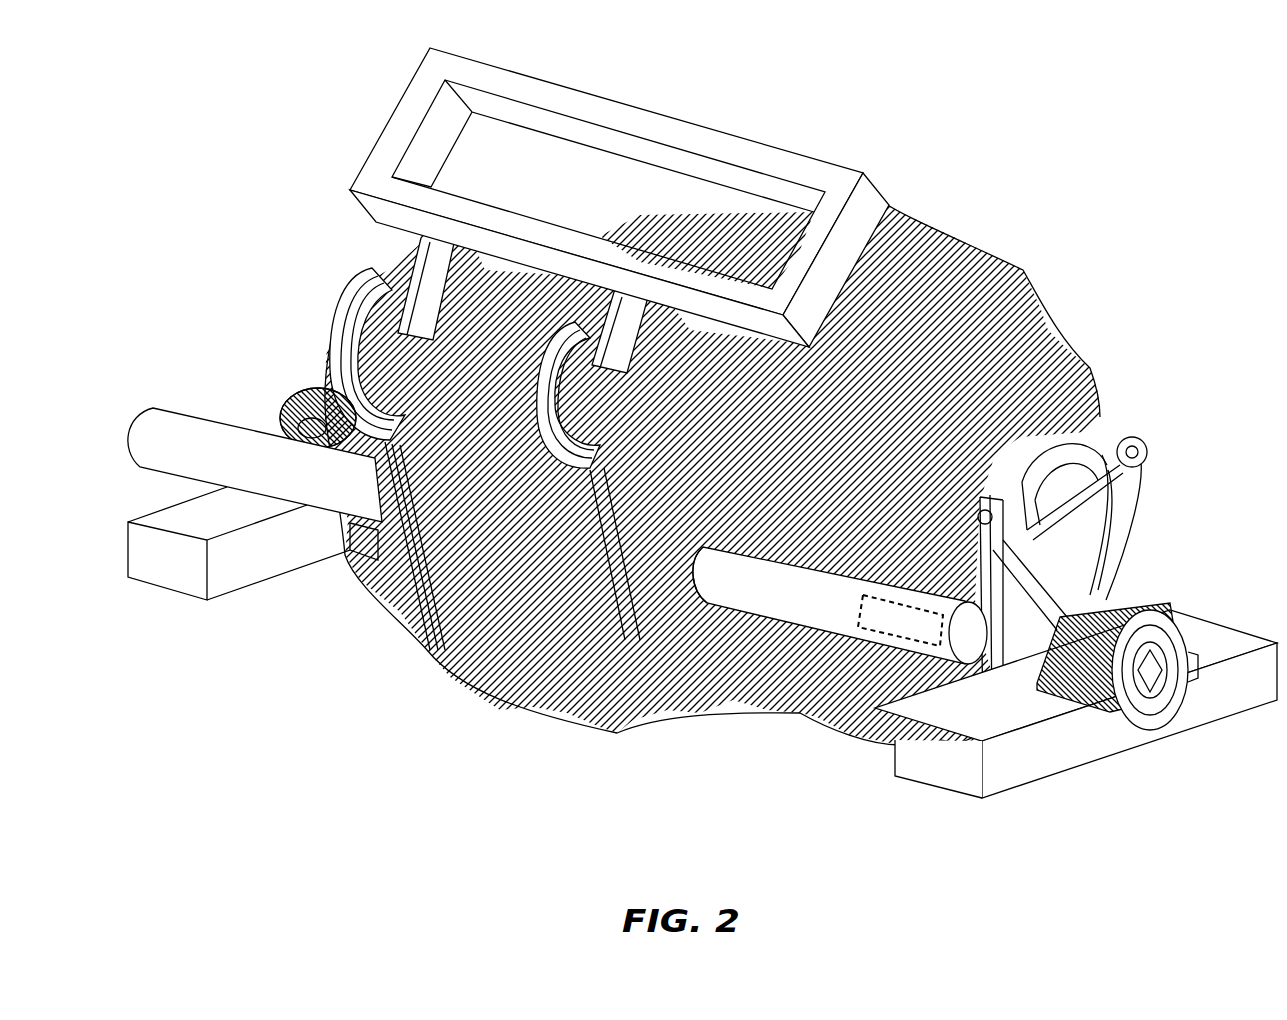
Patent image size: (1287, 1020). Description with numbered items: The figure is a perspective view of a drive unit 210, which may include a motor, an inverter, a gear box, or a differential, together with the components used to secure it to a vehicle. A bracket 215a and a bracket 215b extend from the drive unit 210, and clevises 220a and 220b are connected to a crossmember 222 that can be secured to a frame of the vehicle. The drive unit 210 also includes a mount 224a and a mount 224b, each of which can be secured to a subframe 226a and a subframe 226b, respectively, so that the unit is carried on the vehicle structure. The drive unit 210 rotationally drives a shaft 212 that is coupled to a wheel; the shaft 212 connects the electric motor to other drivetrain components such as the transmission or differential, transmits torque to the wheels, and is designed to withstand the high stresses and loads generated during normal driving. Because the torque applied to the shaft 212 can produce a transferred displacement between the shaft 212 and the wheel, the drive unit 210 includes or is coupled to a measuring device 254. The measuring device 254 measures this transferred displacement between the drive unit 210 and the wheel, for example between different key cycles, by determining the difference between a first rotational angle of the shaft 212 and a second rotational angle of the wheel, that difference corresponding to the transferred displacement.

The drive unit 210 is at (1017, 272).
The shaft 212 is at (828, 632).
The bracket 215a is at (350, 317).
The bracket 215b is at (545, 330).
The clevis 220a is at (397, 263).
The clevis 220b is at (678, 335).
The crossmember 222 is at (357, 173).
The mount 224a is at (292, 412).
The mount 224b is at (1175, 605).
The subframe 226a is at (147, 590).
The subframe 226b is at (1222, 720).
The measuring device 254 is at (907, 650).